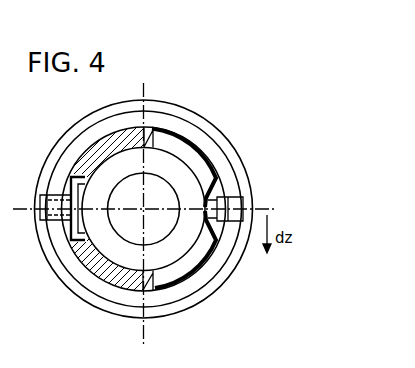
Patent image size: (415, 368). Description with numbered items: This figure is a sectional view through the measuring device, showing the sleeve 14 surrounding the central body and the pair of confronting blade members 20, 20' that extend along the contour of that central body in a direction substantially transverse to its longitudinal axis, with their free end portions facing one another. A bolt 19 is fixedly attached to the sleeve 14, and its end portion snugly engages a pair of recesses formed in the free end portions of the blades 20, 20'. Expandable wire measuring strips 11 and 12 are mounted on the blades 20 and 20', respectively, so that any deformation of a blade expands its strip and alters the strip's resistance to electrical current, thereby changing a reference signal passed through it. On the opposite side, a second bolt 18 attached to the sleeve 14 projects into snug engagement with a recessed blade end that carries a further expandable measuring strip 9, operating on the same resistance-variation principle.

The expandable measuring strip 9 is at (69, 179).
The expandable wire measuring strip 11 is at (206, 130).
The expandable wire measuring strip 12 is at (193, 273).
The sleeve 14 is at (184, 112).
The bolt 18 is at (42, 216).
The bolt 19 is at (242, 197).
The blade member 20 is at (210, 168).
The blade member 20' is at (209, 256).